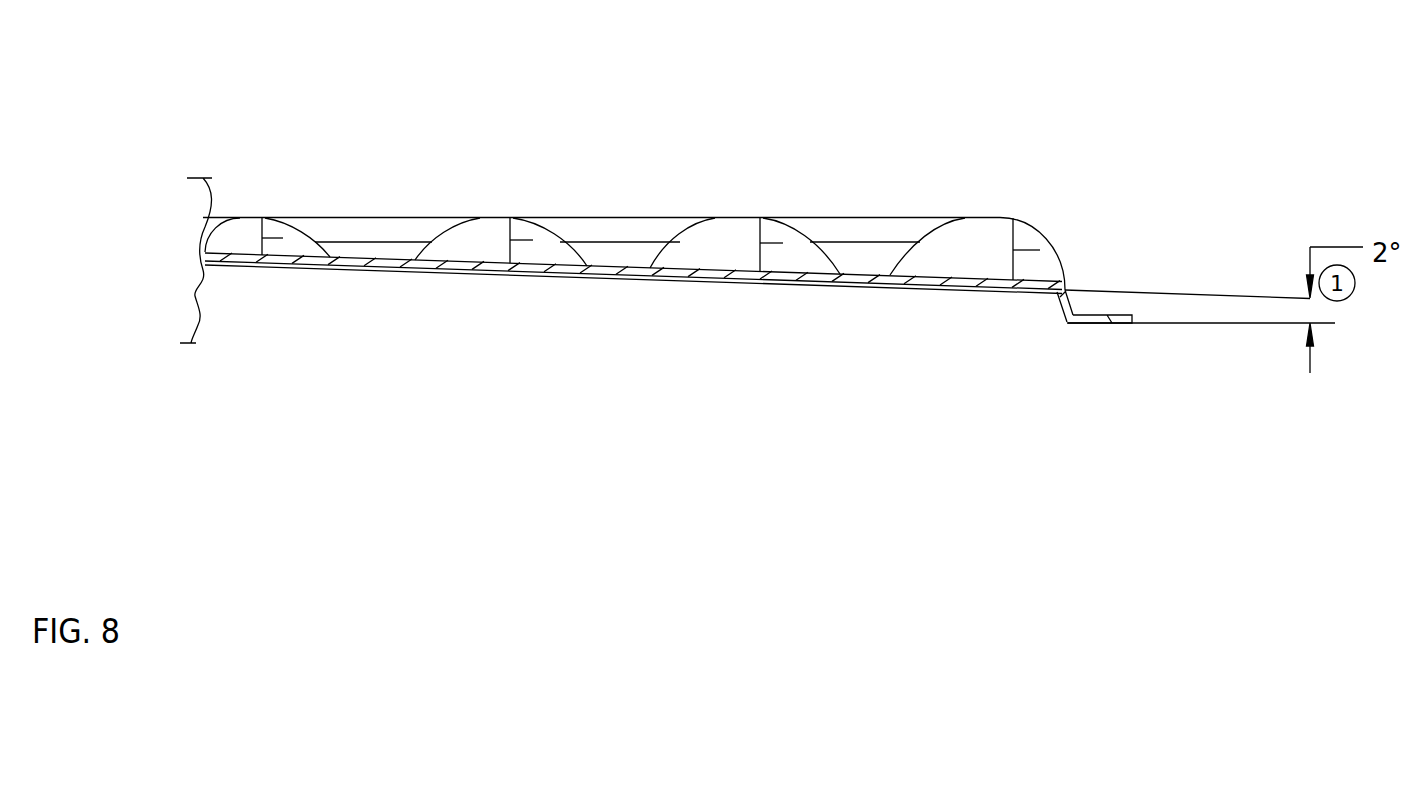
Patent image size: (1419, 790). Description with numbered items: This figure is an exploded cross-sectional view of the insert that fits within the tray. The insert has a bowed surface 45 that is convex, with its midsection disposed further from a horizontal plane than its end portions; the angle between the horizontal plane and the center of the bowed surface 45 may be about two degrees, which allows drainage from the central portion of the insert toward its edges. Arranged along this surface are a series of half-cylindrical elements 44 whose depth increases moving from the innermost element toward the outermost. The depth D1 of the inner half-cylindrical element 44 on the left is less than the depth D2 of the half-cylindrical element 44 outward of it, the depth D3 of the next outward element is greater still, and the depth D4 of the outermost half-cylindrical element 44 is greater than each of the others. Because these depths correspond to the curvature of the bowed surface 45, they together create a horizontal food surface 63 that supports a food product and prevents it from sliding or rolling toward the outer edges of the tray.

The horizontal food surface 63 is at (893, 217).
The half-cylindrical element 44 is at (478, 243).
The bowed surface 45 is at (922, 280).
The depth of inner half-cylindrical element D1 is at (283, 238).
The depth of second half-cylindrical element D2 is at (533, 238).
The depth of third half-cylindrical element D3 is at (783, 243).
The depth of outermost half-cylindrical element D4 is at (1041, 247).